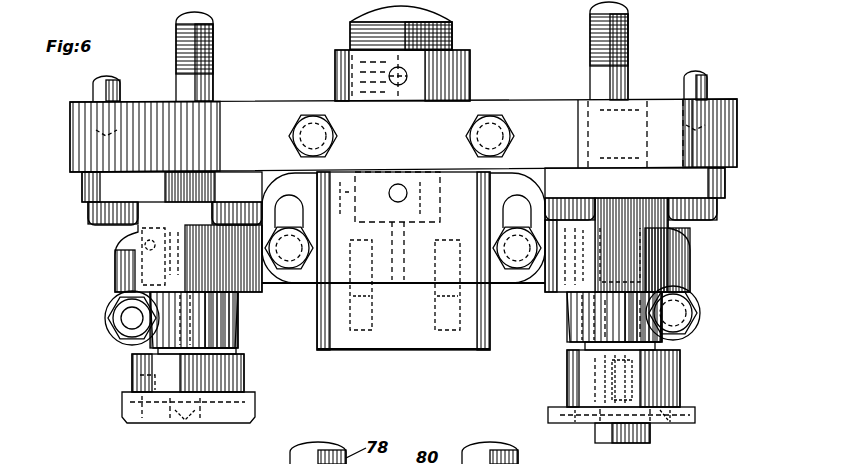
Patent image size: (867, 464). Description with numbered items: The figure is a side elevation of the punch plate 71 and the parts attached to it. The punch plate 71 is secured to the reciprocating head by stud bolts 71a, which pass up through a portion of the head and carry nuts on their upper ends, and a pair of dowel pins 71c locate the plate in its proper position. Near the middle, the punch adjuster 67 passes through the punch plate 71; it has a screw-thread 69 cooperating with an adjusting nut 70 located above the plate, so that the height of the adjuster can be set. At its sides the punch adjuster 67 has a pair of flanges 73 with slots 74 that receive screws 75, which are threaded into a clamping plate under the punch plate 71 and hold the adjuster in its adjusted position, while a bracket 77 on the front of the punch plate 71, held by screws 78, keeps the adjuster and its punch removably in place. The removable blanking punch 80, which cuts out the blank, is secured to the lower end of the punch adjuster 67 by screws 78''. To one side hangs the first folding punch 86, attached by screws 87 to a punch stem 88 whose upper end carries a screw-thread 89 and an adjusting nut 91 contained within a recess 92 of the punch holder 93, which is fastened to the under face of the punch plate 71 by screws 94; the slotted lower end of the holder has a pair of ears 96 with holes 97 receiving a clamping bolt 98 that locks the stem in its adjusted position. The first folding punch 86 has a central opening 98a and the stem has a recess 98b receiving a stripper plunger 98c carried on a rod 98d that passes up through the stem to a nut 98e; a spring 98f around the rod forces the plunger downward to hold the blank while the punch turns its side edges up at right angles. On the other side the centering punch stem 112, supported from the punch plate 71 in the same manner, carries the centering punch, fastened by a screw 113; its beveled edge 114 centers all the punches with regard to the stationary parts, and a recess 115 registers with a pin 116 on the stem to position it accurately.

The punch plate 71 is at (724, 148).
The stud bolts 71a is at (210, 52).
The dowel pins 71c is at (120, 88).
The punch adjuster 67 is at (355, 32).
The screw-thread 69 is at (452, 30).
The adjusting nut 70 is at (335, 76).
The bracket 77 is at (472, 104).
The screws 78 is at (402, 114).
The flanges 73 is at (323, 190).
The slots 74 is at (289, 215).
The screws 75 is at (294, 265).
The blanking punch 80 is at (410, 340).
The screws 78'' is at (400, 277).
The centering punch stem 112 is at (142, 368).
The pin 116 is at (140, 380).
The beveled edge 114 is at (124, 418).
The recess 115 is at (148, 422).
The screw 113 is at (190, 422).
The nut 98e is at (622, 162).
The screws 94 is at (715, 211).
The punch holder 93 is at (688, 270).
The screw-thread 89 is at (640, 250).
The ears 96 is at (700, 300).
The holes 97 is at (700, 322).
The clamping bolt 98 is at (690, 330).
The rod 98d is at (618, 317).
The recess 92 is at (573, 270).
The adjusting nut 91 is at (580, 280).
The punch stem 88 is at (682, 388).
The spring 98f is at (650, 387).
The recess 98b is at (592, 382).
The first folding punch 86 is at (690, 415).
The screws 87 is at (574, 426).
The stripper plunger 98c is at (626, 444).
The central opening 98a is at (655, 426).